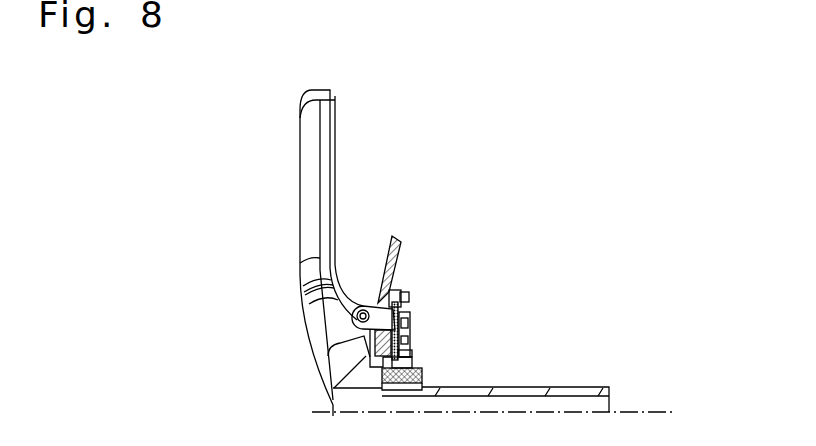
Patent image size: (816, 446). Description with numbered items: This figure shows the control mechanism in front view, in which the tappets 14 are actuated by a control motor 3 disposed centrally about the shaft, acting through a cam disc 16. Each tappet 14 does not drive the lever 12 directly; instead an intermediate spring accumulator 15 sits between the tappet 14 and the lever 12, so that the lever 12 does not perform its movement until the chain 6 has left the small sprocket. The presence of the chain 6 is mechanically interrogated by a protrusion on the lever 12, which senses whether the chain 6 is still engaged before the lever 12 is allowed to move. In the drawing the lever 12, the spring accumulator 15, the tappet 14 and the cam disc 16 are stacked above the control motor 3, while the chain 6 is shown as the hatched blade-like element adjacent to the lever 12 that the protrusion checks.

The control motor 3 is at (422, 375).
The chain 6 is at (390, 294).
The lever 12 is at (403, 298).
The tappet 14 is at (413, 345).
The spring accumulator 15 is at (408, 330).
The cam disc 16 is at (417, 355).